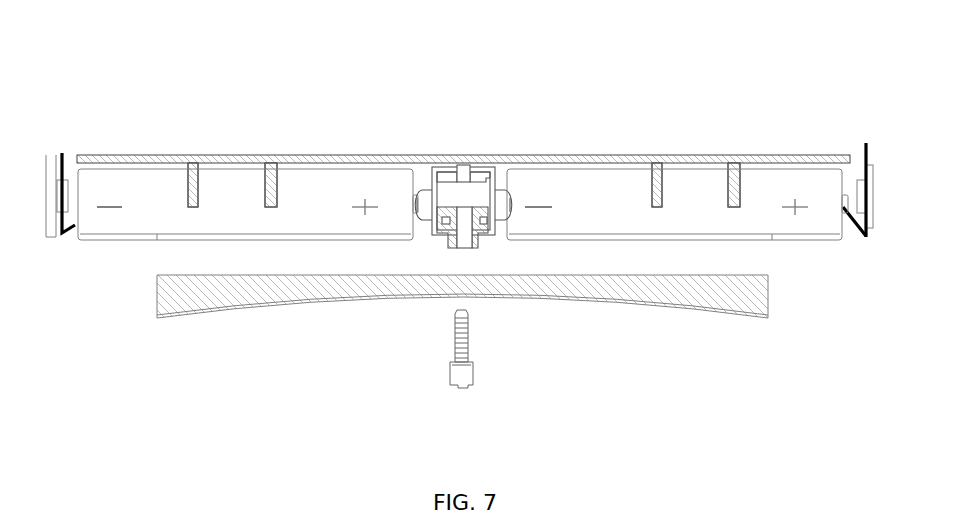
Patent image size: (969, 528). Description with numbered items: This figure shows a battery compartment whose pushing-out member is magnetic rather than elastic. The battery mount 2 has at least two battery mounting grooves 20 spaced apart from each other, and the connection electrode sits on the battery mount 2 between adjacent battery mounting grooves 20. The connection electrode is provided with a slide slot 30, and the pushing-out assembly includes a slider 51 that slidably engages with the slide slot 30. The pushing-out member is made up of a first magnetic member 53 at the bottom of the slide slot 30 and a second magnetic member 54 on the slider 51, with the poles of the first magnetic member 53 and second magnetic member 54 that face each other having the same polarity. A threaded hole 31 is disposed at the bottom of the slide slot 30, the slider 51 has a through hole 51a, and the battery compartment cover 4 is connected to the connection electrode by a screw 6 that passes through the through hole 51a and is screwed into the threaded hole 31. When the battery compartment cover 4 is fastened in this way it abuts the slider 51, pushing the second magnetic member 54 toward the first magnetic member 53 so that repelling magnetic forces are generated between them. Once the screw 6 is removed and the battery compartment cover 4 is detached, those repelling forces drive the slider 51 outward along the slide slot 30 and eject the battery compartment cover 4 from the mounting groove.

The battery mount 2 is at (818, 160).
The battery mounting grooves 20 is at (246, 155).
The slide slot 30 is at (443, 193).
The threaded hole 31 is at (462, 166).
The slider 51 is at (481, 210).
The through hole 51a is at (465, 235).
The first magnetic member 53 is at (450, 178).
The second magnetic member 54 is at (487, 218).
The battery compartment cover 4 is at (237, 293).
The screw 6 is at (464, 377).